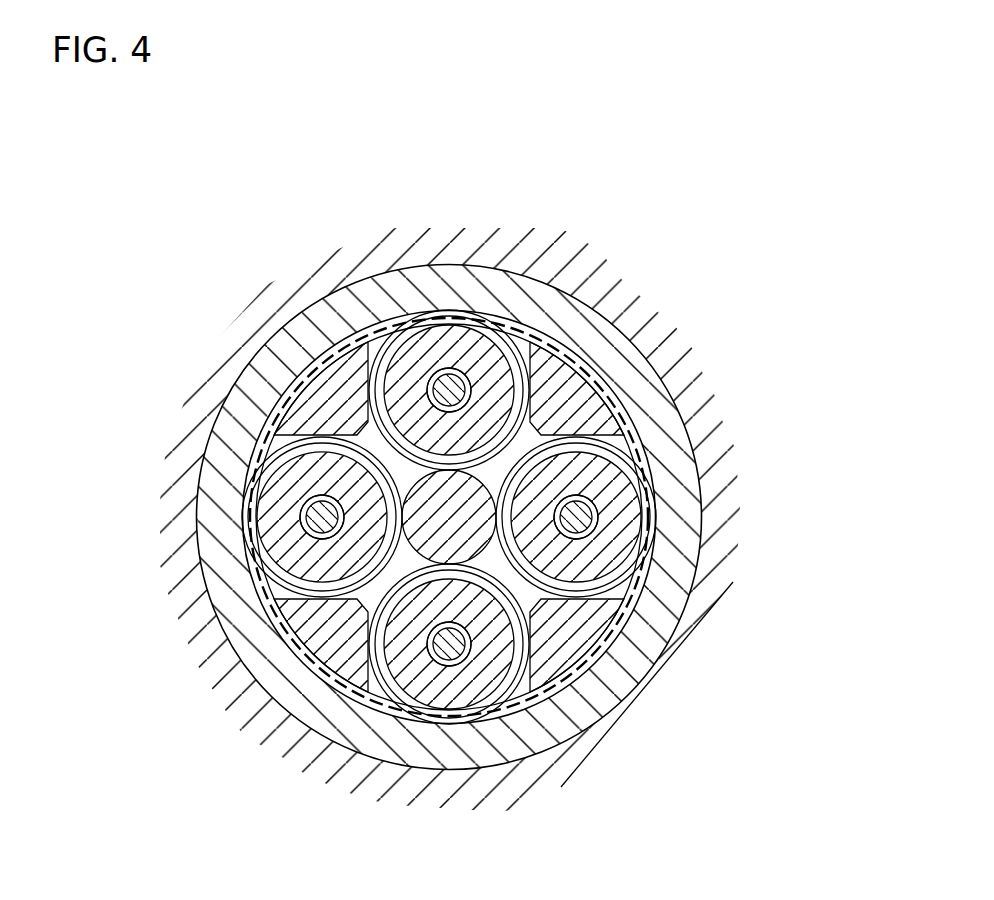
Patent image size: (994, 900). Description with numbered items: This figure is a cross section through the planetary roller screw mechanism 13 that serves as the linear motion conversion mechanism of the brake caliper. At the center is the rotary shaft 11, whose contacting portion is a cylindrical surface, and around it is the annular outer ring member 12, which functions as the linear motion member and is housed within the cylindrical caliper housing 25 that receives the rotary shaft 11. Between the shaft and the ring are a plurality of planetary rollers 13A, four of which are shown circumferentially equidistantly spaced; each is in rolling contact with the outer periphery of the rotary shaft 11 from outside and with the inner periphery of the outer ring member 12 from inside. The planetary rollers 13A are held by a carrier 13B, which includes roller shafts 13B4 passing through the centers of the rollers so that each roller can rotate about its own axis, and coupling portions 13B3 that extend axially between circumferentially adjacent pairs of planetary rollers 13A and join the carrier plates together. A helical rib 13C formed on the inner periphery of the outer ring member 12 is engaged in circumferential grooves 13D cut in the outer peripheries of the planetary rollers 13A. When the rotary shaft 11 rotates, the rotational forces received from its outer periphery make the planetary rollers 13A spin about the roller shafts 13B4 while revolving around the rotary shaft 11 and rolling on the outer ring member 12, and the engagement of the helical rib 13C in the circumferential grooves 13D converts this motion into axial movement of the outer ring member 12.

The rotary shaft 11 is at (305, 660).
The outer ring member 12 is at (652, 400).
The planetary roller screw mechanism 13 is at (647, 442).
The planetary rollers 13A is at (632, 511).
The carrier 13B is at (573, 645).
The coupling portions 13B3 is at (622, 700).
The roller shafts 13B4 is at (467, 655).
The helical rib 13C is at (608, 582).
The circumferential grooves 13D is at (673, 643).
The caliper housing 25 is at (641, 312).